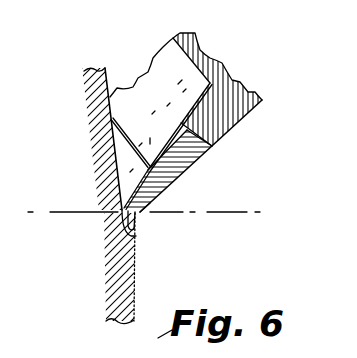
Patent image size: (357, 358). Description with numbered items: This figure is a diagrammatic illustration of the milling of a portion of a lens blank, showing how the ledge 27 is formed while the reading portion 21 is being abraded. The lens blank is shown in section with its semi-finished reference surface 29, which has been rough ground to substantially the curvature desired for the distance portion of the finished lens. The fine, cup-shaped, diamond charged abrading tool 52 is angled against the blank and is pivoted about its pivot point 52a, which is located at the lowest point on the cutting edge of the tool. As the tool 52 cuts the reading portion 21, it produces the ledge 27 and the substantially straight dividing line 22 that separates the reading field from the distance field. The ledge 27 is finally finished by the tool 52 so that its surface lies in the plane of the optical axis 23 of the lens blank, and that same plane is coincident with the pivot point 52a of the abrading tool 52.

The reading field 21 is at (104, 135).
The dividing line 22 is at (137, 236).
The optical axis 23 is at (214, 212).
The ledge 27 is at (147, 211).
The reference surface 29 is at (137, 263).
The fine abrading tool 52 is at (222, 143).
The pivot point 52a is at (123, 227).